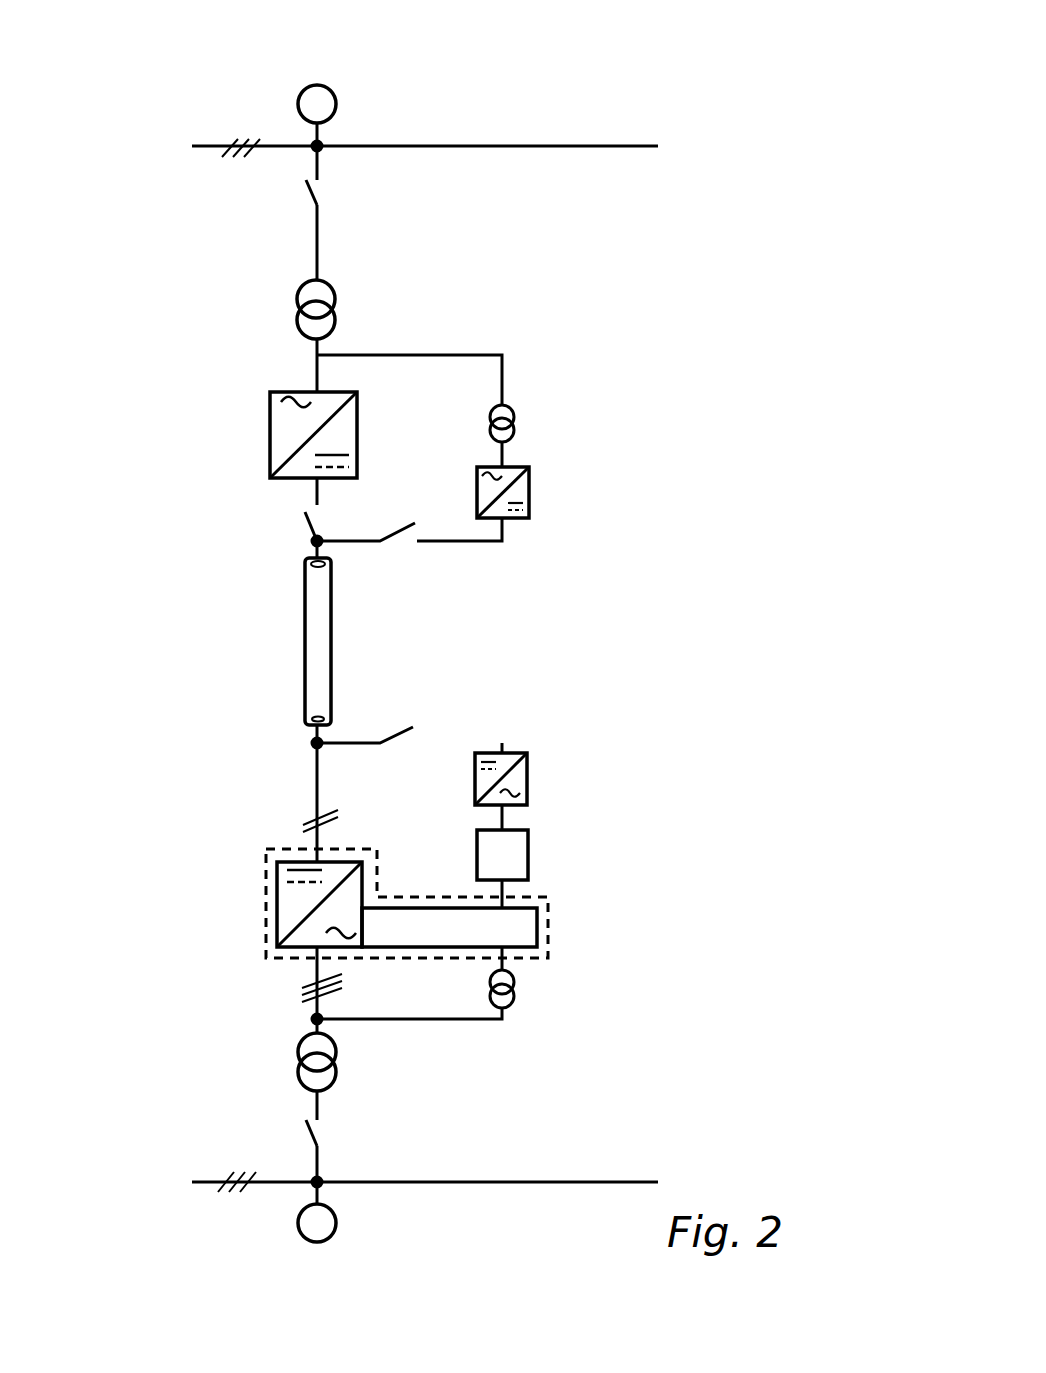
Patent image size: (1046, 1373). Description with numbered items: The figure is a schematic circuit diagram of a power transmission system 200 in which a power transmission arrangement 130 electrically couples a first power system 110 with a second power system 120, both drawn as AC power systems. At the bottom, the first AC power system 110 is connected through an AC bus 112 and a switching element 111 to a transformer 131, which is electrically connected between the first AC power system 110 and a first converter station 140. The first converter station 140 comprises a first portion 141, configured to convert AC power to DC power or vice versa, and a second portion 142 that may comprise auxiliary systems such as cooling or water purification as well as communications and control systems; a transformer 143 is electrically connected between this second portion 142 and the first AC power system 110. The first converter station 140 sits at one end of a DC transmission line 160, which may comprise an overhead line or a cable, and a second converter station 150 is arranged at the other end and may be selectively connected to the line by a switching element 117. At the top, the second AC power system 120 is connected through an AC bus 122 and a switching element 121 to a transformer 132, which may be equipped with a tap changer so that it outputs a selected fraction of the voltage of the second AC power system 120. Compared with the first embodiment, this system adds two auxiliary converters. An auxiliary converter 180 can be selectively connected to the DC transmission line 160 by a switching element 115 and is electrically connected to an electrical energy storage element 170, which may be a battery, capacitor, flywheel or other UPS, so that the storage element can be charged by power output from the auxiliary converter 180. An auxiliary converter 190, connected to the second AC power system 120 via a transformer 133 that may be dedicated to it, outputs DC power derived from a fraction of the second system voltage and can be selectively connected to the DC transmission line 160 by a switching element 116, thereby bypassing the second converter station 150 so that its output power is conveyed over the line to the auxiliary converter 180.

The power transmission system 200 is at (664, 80).
The first power system 110 is at (298, 1225).
The switching element 111 is at (334, 1128).
The AC bus 112 is at (485, 1180).
The switching element 115 is at (405, 751).
The switching element 116 is at (403, 549).
The switching element 117 is at (329, 517).
The second power system 120 is at (336, 102).
The switching element 121 is at (331, 187).
The AC bus 122 is at (520, 148).
The power transmission arrangement 130 is at (591, 402).
The transformer 131 is at (296, 1055).
The transformer 132 is at (288, 306).
The transformer 133 is at (522, 423).
The first converter station 140 is at (408, 911).
The first portion 141 is at (277, 927).
The second portion 142 is at (538, 930).
The transformer 143 is at (525, 1000).
The second converter station 150 is at (270, 428).
The DC transmission line 160 is at (305, 620).
The electrical energy storage element 170 is at (528, 853).
The auxiliary converter 180 is at (527, 770).
The auxiliary converter 190 is at (529, 490).